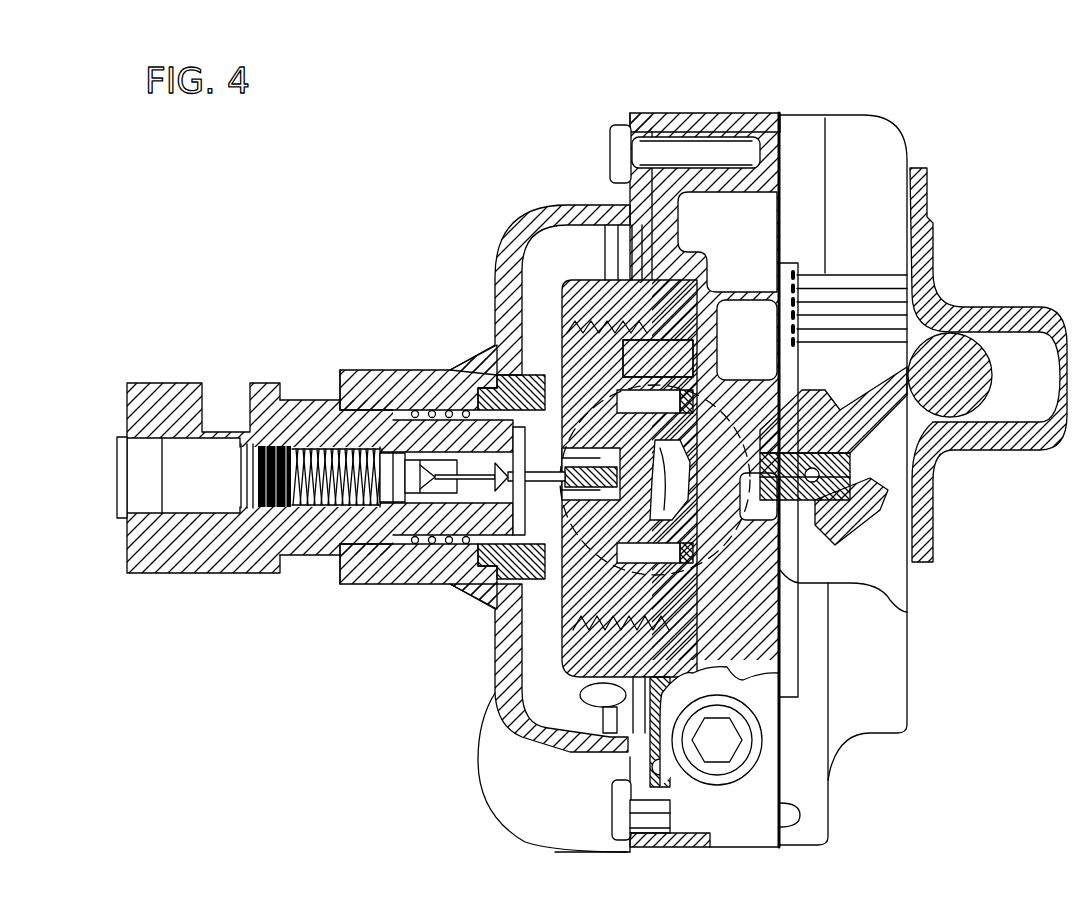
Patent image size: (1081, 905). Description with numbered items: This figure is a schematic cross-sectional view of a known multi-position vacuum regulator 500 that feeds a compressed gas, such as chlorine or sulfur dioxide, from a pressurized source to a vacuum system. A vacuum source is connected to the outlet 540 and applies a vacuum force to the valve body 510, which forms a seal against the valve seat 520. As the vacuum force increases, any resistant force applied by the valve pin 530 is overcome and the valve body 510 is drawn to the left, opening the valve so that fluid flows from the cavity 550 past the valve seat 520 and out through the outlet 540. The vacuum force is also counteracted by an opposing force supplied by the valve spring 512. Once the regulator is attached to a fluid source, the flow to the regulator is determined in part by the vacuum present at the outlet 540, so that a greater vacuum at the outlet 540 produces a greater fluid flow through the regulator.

The valve assembly 500 is at (975, 158).
The valve body 510 is at (390, 452).
The valve spring 512 is at (318, 500).
The valve seat 520 is at (423, 440).
The valve pin 530 is at (533, 470).
The outlet 540 is at (220, 485).
The cavity 550 is at (548, 273).